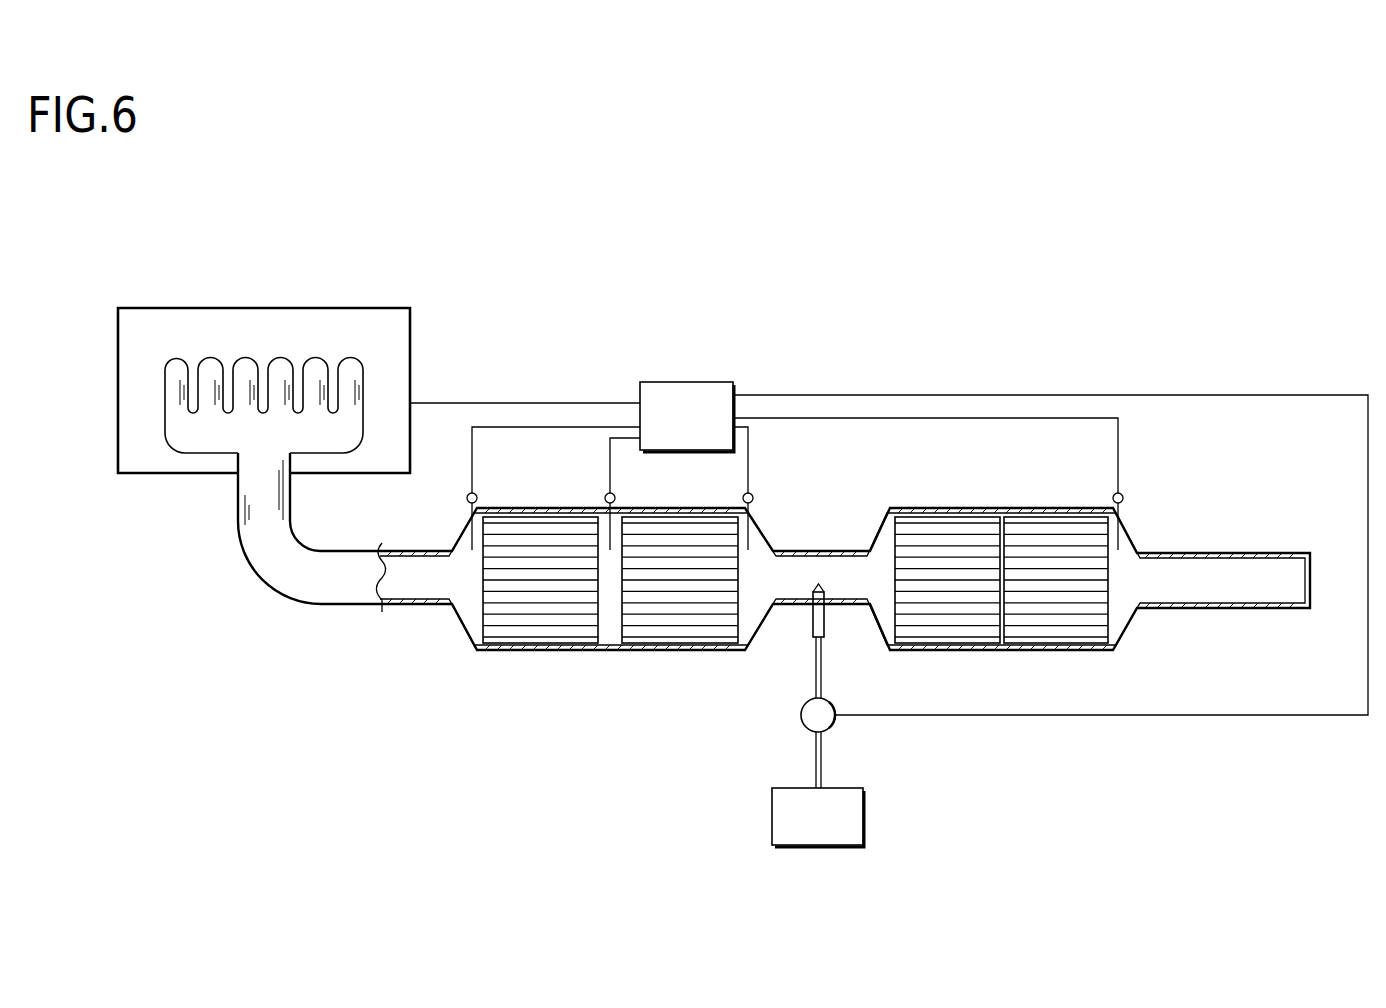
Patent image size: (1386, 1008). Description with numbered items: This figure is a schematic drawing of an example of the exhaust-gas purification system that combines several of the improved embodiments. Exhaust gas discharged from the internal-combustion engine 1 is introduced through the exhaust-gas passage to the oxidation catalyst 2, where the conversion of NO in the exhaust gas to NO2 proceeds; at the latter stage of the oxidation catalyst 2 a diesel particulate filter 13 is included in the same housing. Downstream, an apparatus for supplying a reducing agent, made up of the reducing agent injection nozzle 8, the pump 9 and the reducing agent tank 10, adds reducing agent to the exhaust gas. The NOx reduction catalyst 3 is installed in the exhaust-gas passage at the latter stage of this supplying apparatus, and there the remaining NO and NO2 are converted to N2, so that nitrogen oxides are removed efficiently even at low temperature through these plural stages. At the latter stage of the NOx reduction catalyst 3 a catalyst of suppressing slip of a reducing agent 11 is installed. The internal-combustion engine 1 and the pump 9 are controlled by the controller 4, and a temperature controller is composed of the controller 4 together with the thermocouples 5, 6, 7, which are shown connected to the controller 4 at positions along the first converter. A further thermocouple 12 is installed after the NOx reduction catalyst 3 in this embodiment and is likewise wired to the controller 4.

The internal-combustion engine 1 is at (385, 308).
The oxidation catalyst 2 is at (545, 648).
The NOx reduction catalyst 3 is at (936, 648).
The controller 4 is at (712, 382).
The thermocouple 5 is at (467, 496).
The thermocouple 6 is at (605, 496).
The thermocouple 7 is at (743, 496).
The reducing agent injection nozzle 8 is at (812, 620).
The pump 9 is at (801, 715).
The reducing agent tank 10 is at (772, 818).
The catalyst of suppressing slip of a reducing agent 11 is at (1046, 648).
The thermocouple 12 is at (1113, 496).
The diesel particulate filter 13 is at (655, 648).